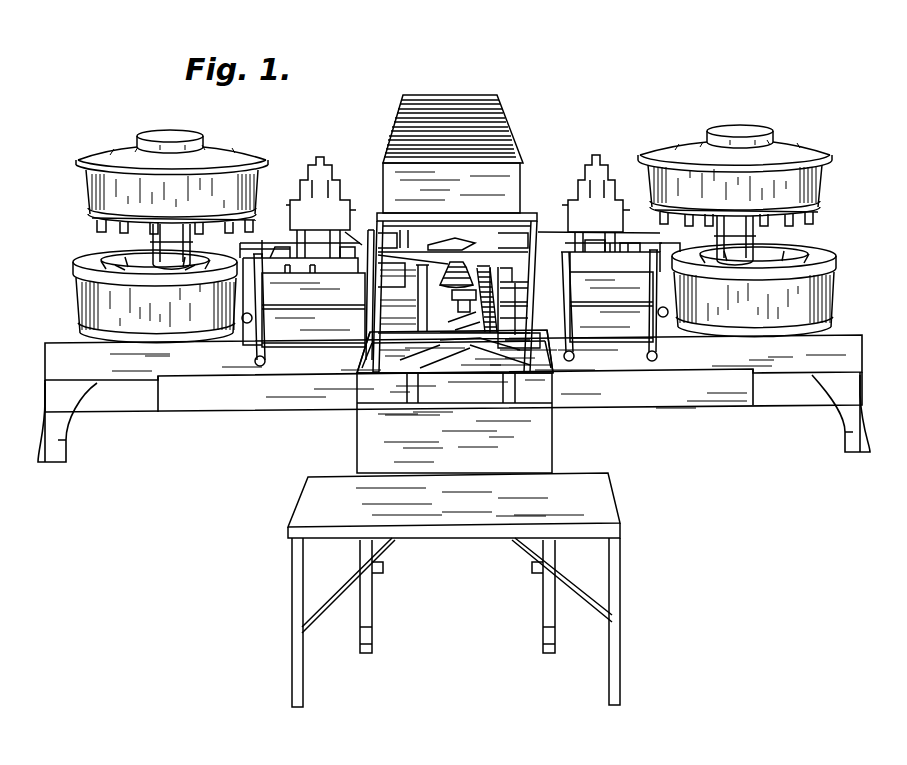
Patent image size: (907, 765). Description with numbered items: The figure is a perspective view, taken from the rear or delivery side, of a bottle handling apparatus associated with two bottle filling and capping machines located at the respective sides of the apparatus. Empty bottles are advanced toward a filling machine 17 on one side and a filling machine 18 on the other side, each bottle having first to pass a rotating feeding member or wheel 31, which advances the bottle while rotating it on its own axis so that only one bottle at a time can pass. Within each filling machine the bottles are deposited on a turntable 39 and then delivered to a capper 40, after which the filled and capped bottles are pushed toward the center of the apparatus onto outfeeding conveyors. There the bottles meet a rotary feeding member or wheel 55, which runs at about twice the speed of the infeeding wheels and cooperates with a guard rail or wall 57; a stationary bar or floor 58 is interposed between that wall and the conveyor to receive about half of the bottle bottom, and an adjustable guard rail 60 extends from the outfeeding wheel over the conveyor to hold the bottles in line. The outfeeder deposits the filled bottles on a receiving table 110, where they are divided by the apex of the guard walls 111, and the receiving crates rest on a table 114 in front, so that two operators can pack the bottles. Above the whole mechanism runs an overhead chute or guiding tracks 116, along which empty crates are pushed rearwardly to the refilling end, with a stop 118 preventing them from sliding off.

The filling machine 17 is at (88, 215).
The filling machine 18 is at (820, 200).
The rotating feeding member or wheel 31 is at (366, 240).
The turntable 39 is at (75, 264).
The capper 40 is at (458, 206).
The rotary feeding member or wheel 55 is at (457, 262).
The guard rail or wall 57 is at (490, 320).
The stationary bar or floor 58 is at (490, 294).
The adjustable guard rail 60 is at (482, 300).
The receiving table 110 is at (357, 366).
The guard walls 111 is at (460, 366).
The table 114 is at (454, 590).
The overhead chute or guiding tracks 116 is at (390, 207).
The stop 118 is at (455, 267).